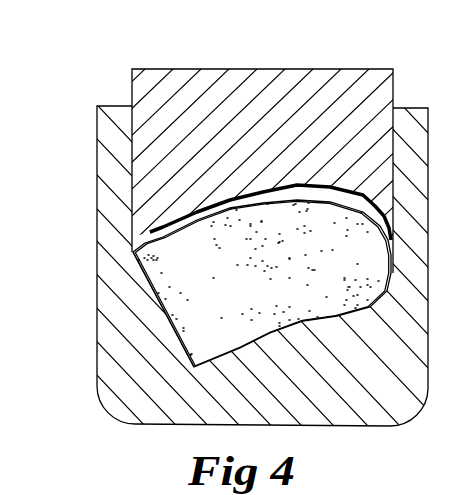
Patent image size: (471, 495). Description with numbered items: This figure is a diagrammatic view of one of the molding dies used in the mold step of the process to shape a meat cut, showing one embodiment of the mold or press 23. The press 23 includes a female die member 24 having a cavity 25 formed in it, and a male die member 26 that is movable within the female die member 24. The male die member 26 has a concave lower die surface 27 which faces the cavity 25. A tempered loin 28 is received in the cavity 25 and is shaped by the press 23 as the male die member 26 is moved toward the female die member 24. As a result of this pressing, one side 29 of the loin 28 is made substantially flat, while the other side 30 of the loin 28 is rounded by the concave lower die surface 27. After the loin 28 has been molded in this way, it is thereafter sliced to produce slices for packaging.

The mold or press 23 is at (105, 53).
The female die member 24 is at (97, 168).
The cavity 25 is at (138, 244).
The male die member 26 is at (218, 69).
The concave lower die surface 27 is at (164, 224).
The loin 28 is at (145, 317).
The side of the loin 29 is at (173, 334).
The other side of the loin 30 is at (370, 210).